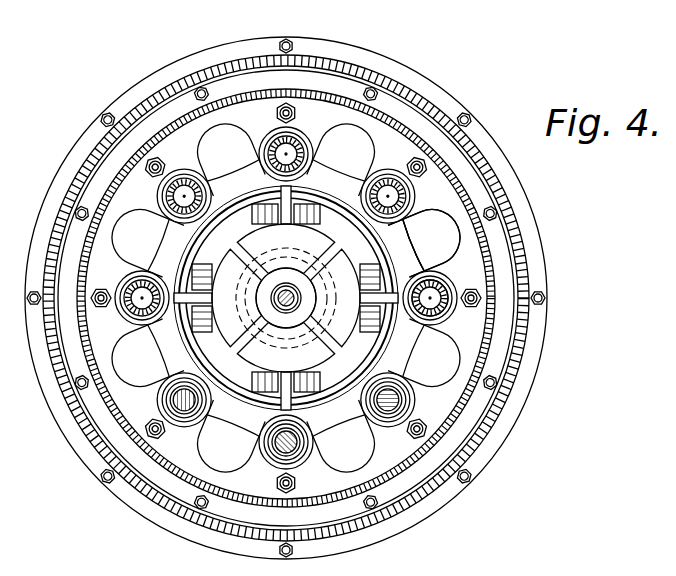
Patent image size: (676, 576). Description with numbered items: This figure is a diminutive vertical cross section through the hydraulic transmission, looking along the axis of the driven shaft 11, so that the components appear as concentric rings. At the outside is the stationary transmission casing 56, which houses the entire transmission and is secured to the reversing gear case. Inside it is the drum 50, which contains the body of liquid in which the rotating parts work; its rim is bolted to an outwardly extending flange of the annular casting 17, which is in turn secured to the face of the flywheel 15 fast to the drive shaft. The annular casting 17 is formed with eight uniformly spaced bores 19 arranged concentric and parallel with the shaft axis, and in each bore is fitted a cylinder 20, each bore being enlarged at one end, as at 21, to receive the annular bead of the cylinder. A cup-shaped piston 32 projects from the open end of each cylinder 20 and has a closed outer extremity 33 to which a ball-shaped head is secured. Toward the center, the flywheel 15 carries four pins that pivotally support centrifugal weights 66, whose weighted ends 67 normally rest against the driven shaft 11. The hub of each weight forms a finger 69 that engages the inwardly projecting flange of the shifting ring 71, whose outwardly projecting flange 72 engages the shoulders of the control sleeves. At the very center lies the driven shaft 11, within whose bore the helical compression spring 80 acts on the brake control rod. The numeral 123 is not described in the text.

The driven shaft 11 is at (268, 307).
The flywheel 15 is at (363, 245).
The annular casting 17 is at (175, 142).
The bore 19 is at (287, 307).
The cylinder 20 is at (308, 137).
The enlarged end of bore 21 is at (442, 312).
The piston 32 is at (193, 185).
The closed outer extremity 33 is at (185, 410).
The drum 50 is at (237, 92).
The stationary transmission casing 56 is at (365, 75).
The centrifugal weight 66 is at (263, 217).
The weighted end 67 is at (286, 298).
The finger 69 is at (312, 191).
The shifting ring 71 is at (408, 245).
The outwardly projecting flange 72 is at (407, 230).
The helical compression spring 80 is at (300, 298).
The bearing race 123 is at (447, 282).